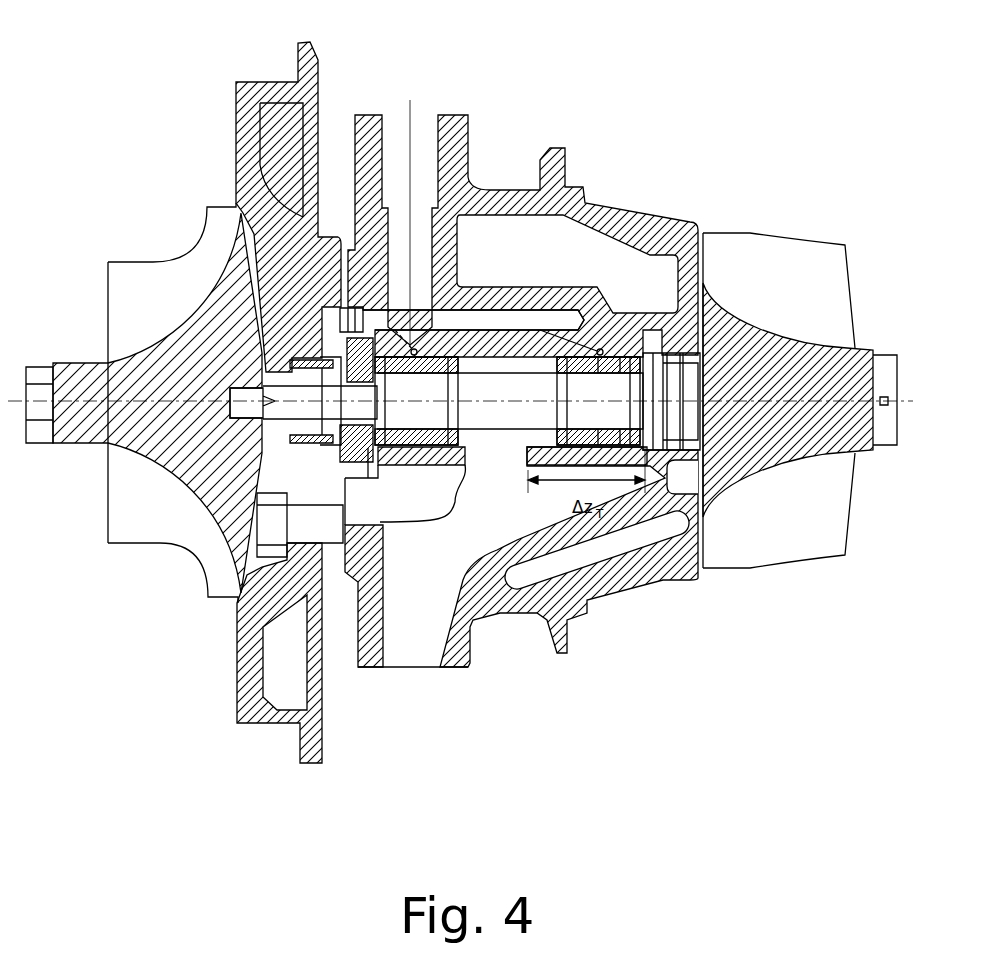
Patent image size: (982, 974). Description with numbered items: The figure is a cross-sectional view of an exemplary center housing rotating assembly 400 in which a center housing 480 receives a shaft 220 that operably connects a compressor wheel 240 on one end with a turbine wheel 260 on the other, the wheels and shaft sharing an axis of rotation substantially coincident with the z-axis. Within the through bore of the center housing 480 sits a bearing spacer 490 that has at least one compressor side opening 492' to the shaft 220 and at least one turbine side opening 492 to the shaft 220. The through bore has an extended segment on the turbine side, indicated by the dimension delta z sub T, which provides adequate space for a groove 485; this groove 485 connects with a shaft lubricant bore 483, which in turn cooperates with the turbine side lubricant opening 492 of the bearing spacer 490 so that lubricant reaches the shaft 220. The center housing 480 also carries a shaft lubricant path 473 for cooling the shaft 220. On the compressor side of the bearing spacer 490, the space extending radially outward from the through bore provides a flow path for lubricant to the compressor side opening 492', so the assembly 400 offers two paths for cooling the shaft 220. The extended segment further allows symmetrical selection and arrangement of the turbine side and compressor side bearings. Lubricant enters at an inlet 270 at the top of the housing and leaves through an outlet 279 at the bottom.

The center housing rotating assembly 400 is at (190, 44).
The compressor wheel 240 is at (160, 218).
The lubricant inlet 270 is at (434, 95).
The turbine wheel 260 is at (796, 188).
The center housing 480 is at (684, 247).
The shaft lubricant bore 483 is at (551, 332).
The shaft lubricant path 473 is at (545, 319).
The compressor side opening 492' is at (416, 401).
The shaft 220 is at (524, 413).
The turbine side opening 492 is at (598, 401).
The groove 485 is at (547, 458).
The bearing spacer 490 is at (488, 455).
The lubricant outlet 279 is at (434, 686).